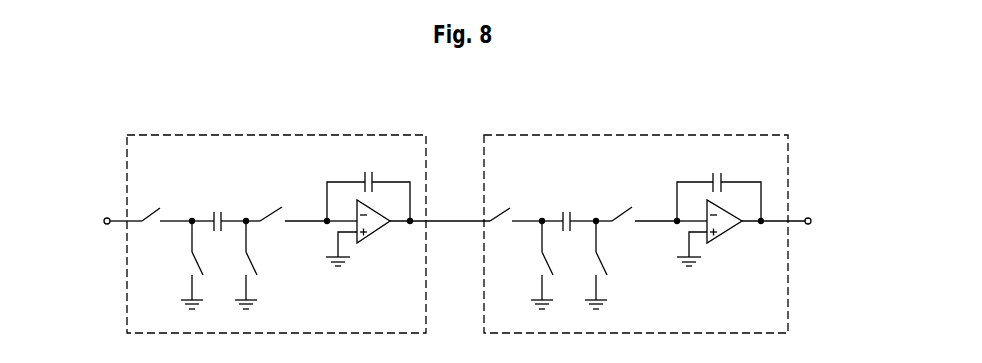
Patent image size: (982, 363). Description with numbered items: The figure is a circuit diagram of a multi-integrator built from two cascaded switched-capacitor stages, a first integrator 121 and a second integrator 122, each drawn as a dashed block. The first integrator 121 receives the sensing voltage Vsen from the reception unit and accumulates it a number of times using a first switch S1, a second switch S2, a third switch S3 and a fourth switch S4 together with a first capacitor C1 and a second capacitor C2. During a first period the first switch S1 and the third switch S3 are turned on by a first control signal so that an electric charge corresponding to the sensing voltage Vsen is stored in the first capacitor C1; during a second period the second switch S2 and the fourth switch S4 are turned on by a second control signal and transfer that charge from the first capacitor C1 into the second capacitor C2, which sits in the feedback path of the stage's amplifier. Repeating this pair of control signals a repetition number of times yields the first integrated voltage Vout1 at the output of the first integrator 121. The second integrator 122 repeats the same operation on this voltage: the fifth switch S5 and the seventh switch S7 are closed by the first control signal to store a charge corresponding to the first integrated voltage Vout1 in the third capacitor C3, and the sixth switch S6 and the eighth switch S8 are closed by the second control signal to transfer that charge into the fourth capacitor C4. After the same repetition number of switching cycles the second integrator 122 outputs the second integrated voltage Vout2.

The first integrator 121 is at (277, 135).
The second integrator 122 is at (635, 135).
The first switch S1 is at (167, 226).
The second switch S2 is at (186, 265).
The third switch S3 is at (242, 265).
The fourth switch S4 is at (286, 226).
The fifth switch S5 is at (516, 226).
The sixth switch S6 is at (536, 265).
The seventh switch S7 is at (591, 265).
The eighth switch S8 is at (636, 226).
The first capacitor C1 is at (219, 211).
The second capacitor C2 is at (368, 188).
The third capacitor C3 is at (569, 211).
The fourth capacitor C4 is at (719, 188).
The sensing voltage Vsen is at (104, 221).
The first integrated voltage Vout1 is at (452, 212).
The second integrated voltage Vout2 is at (831, 222).